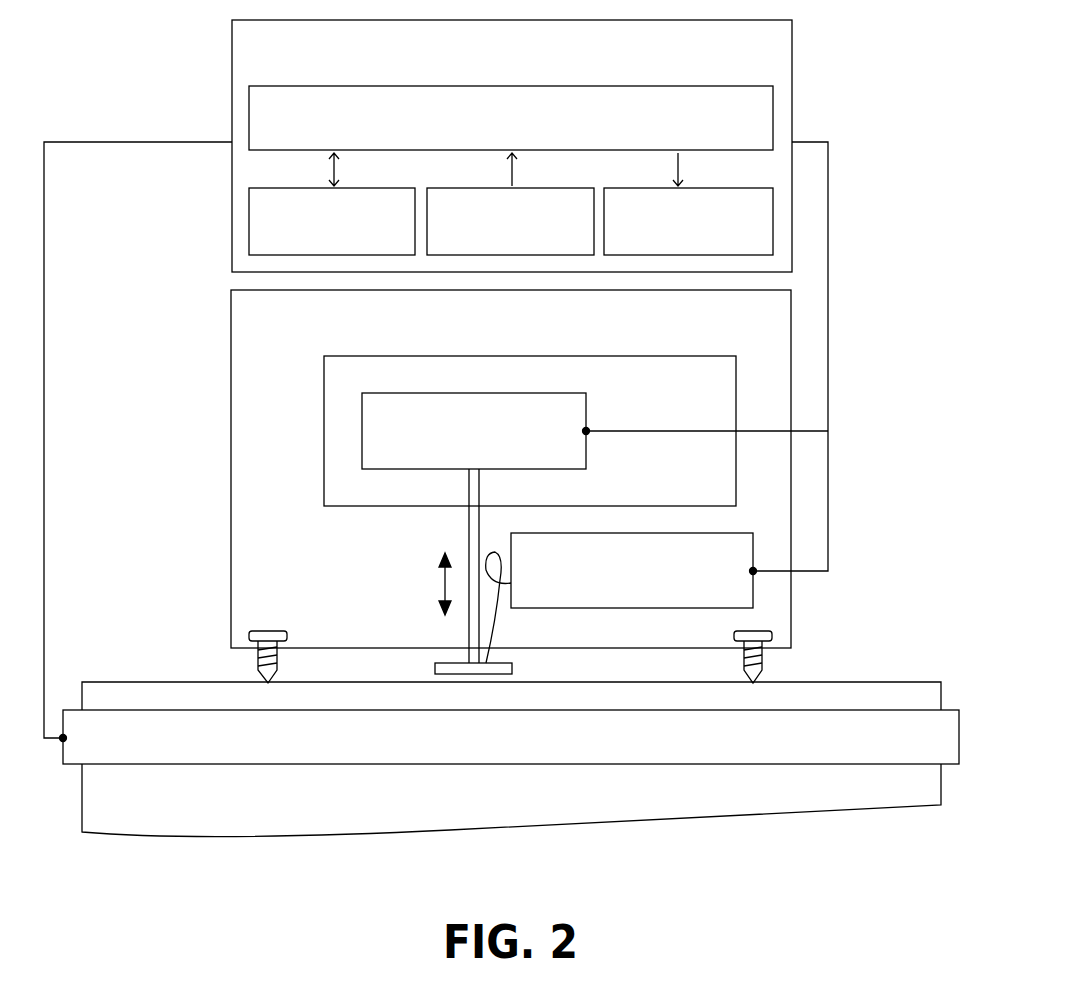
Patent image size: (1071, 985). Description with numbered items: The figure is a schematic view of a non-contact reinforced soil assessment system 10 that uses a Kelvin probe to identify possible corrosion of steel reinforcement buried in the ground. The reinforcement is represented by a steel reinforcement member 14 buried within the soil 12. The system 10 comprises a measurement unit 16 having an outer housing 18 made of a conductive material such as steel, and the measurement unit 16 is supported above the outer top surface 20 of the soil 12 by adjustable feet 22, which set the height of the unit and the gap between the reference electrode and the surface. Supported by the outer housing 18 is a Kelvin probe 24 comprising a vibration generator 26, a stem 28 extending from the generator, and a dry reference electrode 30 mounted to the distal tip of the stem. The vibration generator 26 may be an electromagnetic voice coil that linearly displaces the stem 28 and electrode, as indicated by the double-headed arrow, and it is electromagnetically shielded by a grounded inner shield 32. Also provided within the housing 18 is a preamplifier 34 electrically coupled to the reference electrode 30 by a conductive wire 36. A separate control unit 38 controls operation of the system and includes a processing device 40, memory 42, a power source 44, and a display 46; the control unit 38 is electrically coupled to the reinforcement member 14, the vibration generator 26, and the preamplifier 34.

The non-contact reinforced soil assessment system 10 is at (912, 128).
The soil 12 is at (190, 828).
The steel reinforcement member 14 is at (511, 737).
The measurement unit 16 is at (525, 486).
The outer housing 18 is at (229, 385).
The outer surface of the soil 20 is at (882, 681).
The adjustable feet 22 is at (280, 616).
The Kelvin probe 24 is at (286, 477).
The vibration generator 26 is at (474, 431).
The stem 28 is at (468, 530).
The dry reference electrode 30 is at (446, 662).
The grounded inner shield 32 is at (650, 355).
The preamplifier 34 is at (632, 570).
The conductive wire 36 is at (492, 626).
The control unit 38 is at (512, 146).
The processing device 40 is at (511, 118).
The memory 42 is at (332, 204).
The power source 44 is at (510, 204).
The display 46 is at (688, 204).